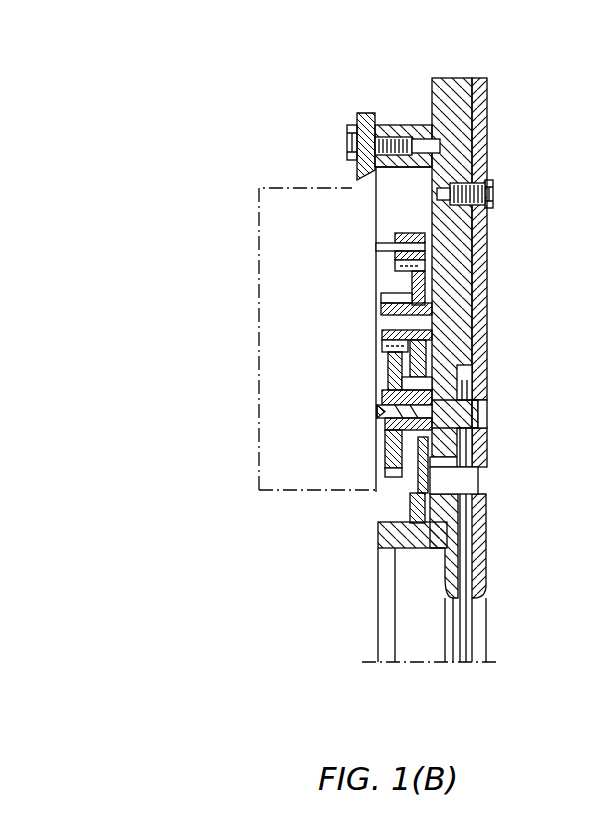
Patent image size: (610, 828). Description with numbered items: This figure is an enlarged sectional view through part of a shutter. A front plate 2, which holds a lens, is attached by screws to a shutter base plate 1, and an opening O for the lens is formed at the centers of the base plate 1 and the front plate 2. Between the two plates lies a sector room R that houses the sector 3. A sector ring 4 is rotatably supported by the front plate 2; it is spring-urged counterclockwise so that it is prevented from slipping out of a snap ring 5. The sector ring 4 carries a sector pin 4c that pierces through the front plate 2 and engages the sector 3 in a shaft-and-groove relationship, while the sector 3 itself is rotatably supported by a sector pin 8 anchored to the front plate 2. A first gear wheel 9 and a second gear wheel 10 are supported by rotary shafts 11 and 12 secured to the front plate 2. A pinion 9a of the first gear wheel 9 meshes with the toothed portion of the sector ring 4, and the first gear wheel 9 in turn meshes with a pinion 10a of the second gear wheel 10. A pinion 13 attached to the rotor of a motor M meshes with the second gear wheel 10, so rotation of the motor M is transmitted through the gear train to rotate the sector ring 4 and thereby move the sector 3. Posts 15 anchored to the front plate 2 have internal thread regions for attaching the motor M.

The shutter base plate 1 is at (487, 96).
The front plate 2 is at (398, 532).
The sector 3 is at (467, 551).
The sector ring 4 is at (420, 460).
The sector pin 4c is at (472, 477).
The snap ring 5 is at (412, 510).
The sector pin 8 is at (475, 412).
The first gear wheel 9 is at (383, 357).
The pinion 9a is at (405, 385).
The second gear wheel 10 is at (412, 281).
The pinion 10a is at (382, 299).
The rotary shaft 11 is at (380, 412).
The rotary shaft 12 is at (386, 324).
The pinion 13 is at (405, 232).
The posts 15 is at (408, 127).
The sector room R is at (467, 374).
The motor M is at (270, 331).
The opening O is at (442, 667).